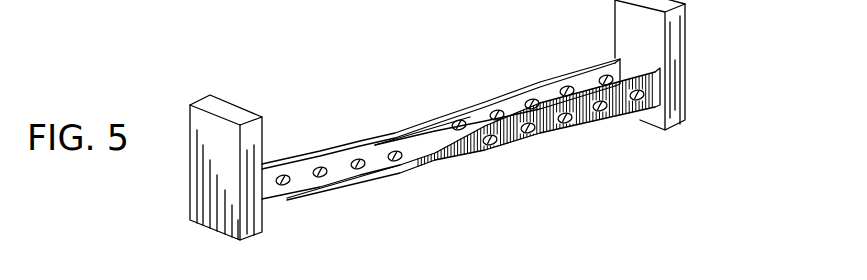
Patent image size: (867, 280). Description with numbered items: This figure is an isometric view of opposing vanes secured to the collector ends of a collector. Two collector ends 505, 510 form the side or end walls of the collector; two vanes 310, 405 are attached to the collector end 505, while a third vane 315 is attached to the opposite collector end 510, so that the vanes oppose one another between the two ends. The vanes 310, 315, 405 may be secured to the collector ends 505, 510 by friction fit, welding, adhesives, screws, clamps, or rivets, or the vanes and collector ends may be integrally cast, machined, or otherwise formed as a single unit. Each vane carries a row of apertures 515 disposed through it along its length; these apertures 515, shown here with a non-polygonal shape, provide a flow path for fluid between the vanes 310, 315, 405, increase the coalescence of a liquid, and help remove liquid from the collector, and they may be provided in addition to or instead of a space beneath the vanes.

The collector end 510 is at (228, 110).
The collector end 505 is at (678, 48).
The vane 315 is at (319, 158).
The vane 405 is at (568, 76).
The vane 310 is at (548, 128).
The apertures 515 is at (323, 175).